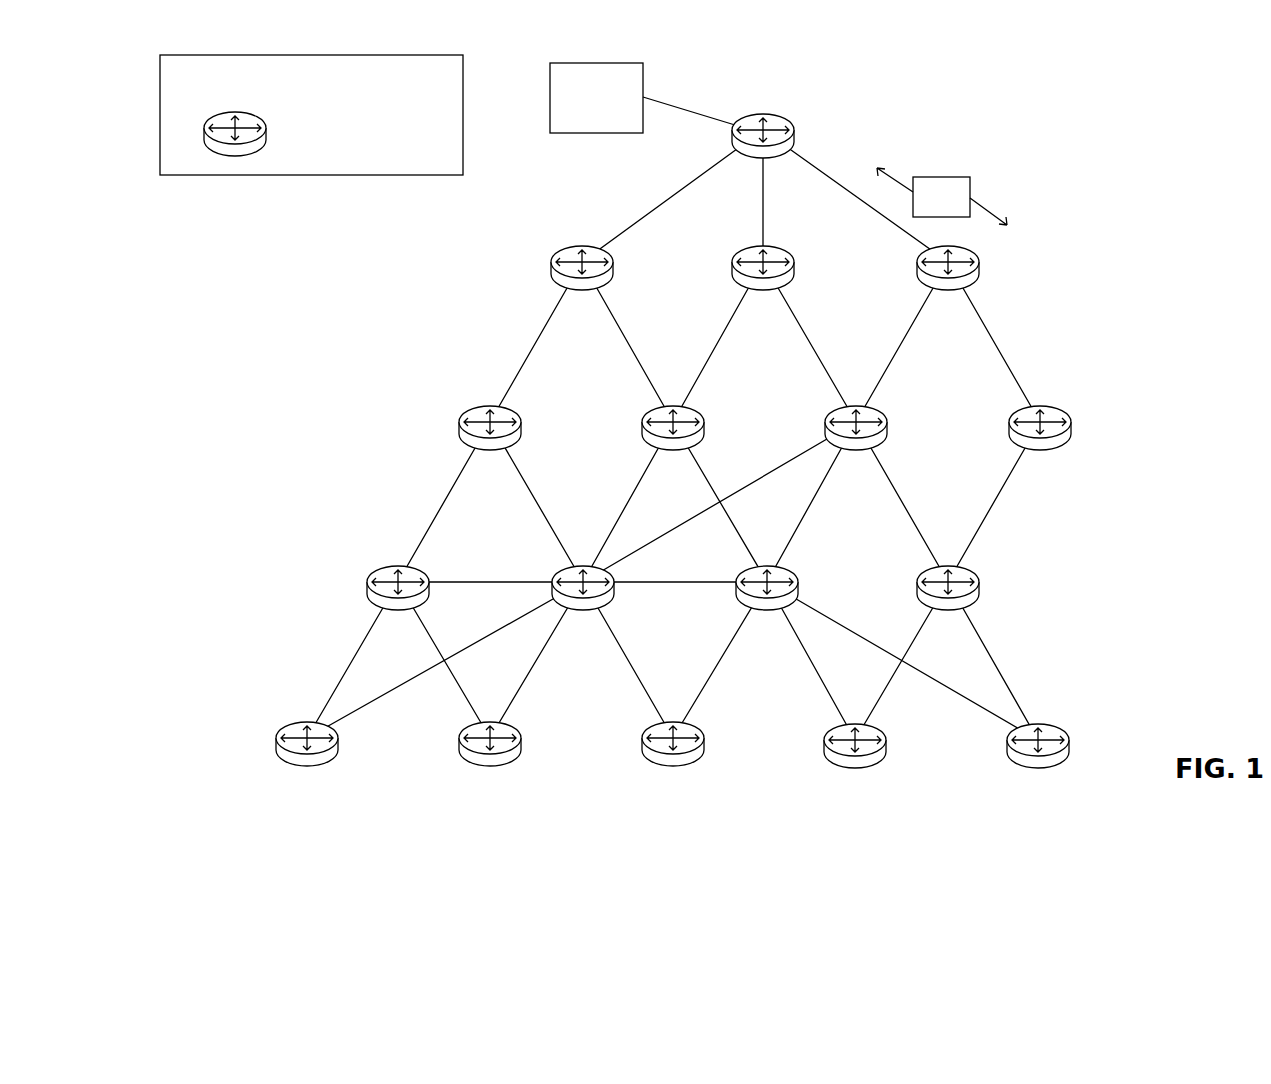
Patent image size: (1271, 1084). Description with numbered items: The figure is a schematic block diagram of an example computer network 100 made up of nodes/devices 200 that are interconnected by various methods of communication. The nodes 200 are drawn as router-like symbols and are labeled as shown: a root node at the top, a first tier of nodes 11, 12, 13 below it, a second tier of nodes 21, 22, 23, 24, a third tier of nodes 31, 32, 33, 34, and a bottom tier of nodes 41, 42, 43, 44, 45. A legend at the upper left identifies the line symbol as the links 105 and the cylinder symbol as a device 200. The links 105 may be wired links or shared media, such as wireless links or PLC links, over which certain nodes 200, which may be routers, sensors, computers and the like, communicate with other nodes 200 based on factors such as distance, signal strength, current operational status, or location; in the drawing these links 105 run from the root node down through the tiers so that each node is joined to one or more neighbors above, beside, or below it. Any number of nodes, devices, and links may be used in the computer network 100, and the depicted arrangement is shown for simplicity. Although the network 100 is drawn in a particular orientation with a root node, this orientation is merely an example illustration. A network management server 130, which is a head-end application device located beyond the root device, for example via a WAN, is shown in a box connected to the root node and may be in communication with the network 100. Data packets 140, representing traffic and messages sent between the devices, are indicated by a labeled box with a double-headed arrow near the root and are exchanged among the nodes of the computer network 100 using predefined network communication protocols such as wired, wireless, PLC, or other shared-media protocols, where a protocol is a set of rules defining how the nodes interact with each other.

The computer network 100 is at (1081, 83).
The links 105 is at (192, 84).
The network management server 130 is at (583, 118).
The data packets 140 is at (955, 207).
The nodes/devices 200 is at (303, 134).
The node 11 is at (582, 280).
The node 12 is at (763, 280).
The node 13 is at (948, 280).
The node 21 is at (490, 440).
The node 22 is at (673, 440).
The node 23 is at (856, 440).
The node 24 is at (1040, 440).
The node 31 is at (398, 600).
The node 32 is at (583, 600).
The node 33 is at (767, 600).
The node 34 is at (948, 600).
The node 41 is at (307, 756).
The node 42 is at (490, 756).
The node 43 is at (673, 756).
The node 44 is at (855, 758).
The node 45 is at (1038, 758).